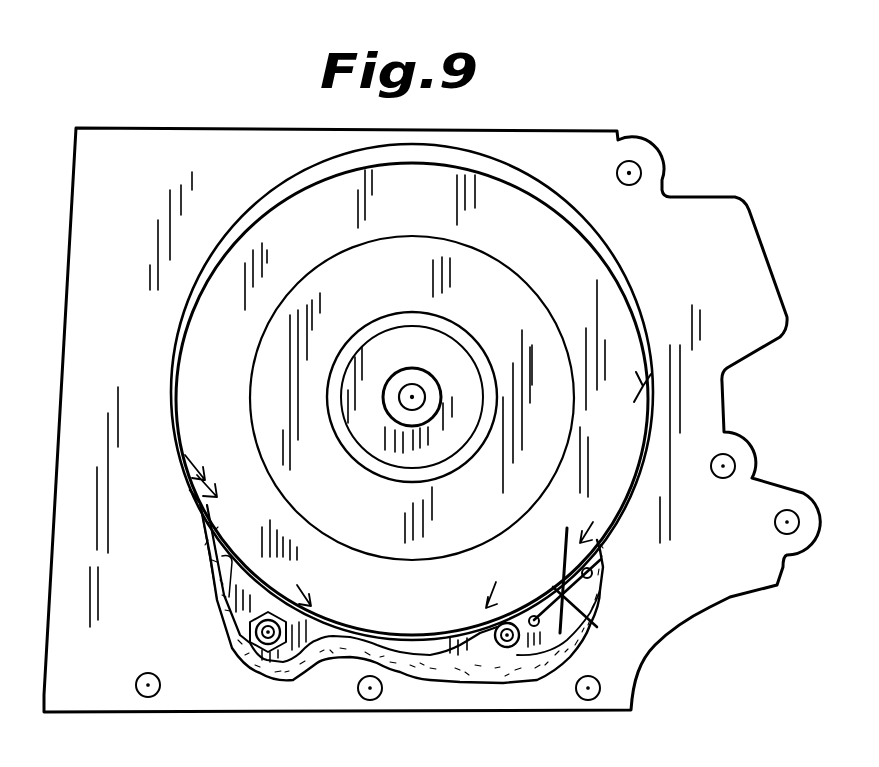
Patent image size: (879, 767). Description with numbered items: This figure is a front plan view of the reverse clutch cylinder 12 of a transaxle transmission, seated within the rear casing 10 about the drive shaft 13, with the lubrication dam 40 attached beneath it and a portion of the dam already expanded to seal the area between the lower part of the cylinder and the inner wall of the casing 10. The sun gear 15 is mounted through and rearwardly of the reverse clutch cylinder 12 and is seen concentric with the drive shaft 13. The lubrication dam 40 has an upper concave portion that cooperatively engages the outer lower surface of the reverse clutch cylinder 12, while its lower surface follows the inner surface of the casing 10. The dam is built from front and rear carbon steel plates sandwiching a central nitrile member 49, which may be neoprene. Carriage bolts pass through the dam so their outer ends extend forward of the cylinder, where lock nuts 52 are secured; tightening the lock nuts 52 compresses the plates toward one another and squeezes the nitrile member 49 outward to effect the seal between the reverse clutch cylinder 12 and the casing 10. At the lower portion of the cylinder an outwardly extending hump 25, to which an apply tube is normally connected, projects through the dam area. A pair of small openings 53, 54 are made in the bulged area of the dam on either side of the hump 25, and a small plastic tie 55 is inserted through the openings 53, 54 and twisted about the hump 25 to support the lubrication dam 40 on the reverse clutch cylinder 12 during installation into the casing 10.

The casing 10 is at (128, 140).
The reverse clutch cylinder 12 is at (597, 279).
The drive shaft 13 is at (422, 373).
The sun gear 15 is at (265, 377).
The hump 25 is at (597, 627).
The lubrication dam 40 is at (247, 590).
The central nitrile member 49 is at (440, 603).
The lock nuts 52 is at (254, 630).
The small opening 53 is at (534, 616).
The small opening 54 is at (593, 576).
The plastic tie 55 is at (557, 576).